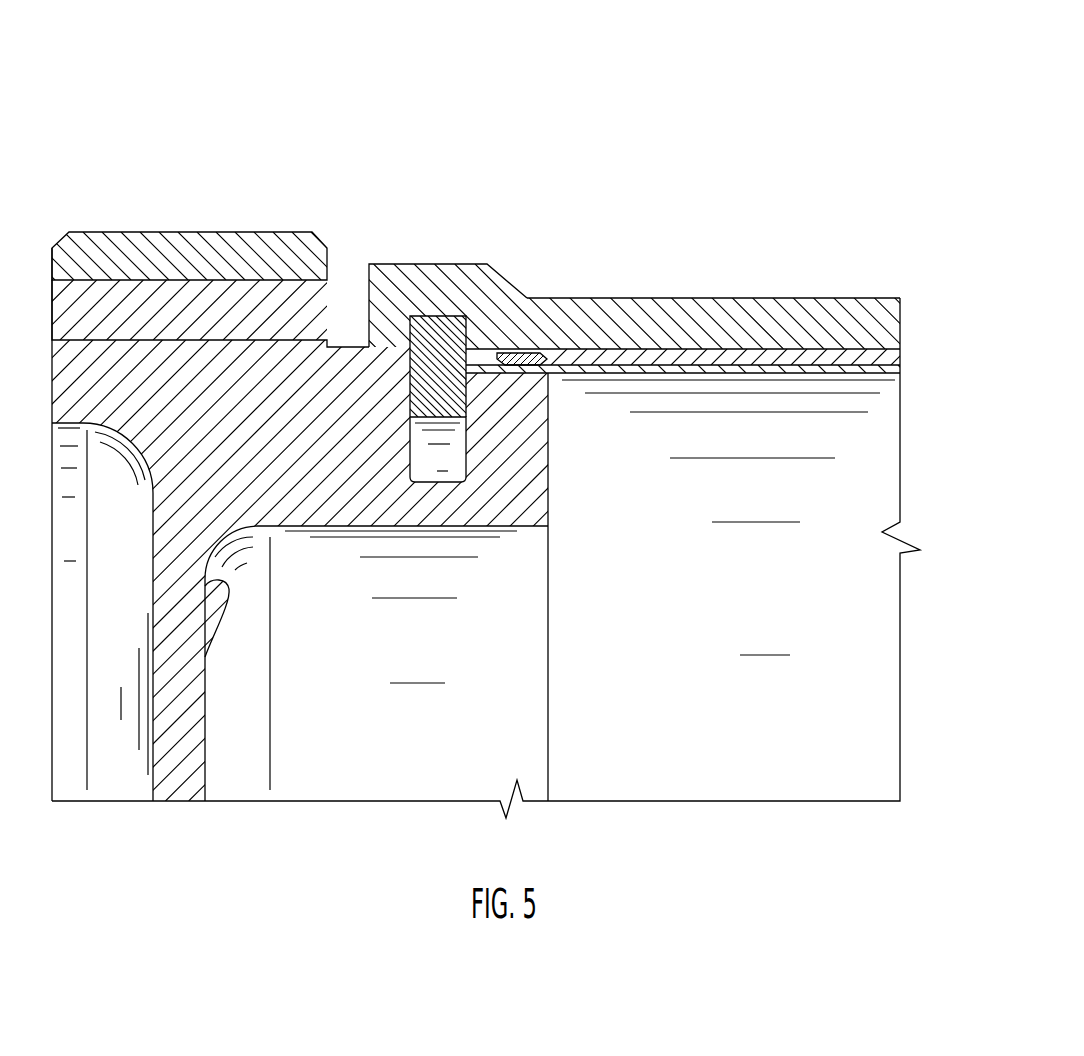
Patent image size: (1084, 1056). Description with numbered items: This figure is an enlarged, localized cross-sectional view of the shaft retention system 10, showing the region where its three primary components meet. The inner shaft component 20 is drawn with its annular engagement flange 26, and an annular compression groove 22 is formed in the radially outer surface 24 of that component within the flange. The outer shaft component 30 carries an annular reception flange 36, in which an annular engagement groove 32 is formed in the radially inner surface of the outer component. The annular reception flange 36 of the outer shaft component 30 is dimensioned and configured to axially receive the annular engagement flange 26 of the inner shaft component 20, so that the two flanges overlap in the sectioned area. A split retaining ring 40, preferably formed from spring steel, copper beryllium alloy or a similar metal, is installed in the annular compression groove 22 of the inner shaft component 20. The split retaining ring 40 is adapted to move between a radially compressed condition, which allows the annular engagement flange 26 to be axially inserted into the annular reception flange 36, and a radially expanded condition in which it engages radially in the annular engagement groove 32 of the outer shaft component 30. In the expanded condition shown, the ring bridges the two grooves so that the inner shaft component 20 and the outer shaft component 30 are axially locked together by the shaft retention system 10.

The shaft retention system 10 is at (655, 85).
The inner shaft component 20 is at (187, 232).
The annular compression groove 22 is at (430, 468).
The radially outer surface 24 is at (351, 347).
The annular engagement flange 26 is at (509, 517).
The outer shaft component 30 is at (786, 298).
The annular engagement groove 32 is at (447, 316).
The annular reception flange 36 is at (402, 264).
The split retaining ring 40 is at (447, 337).